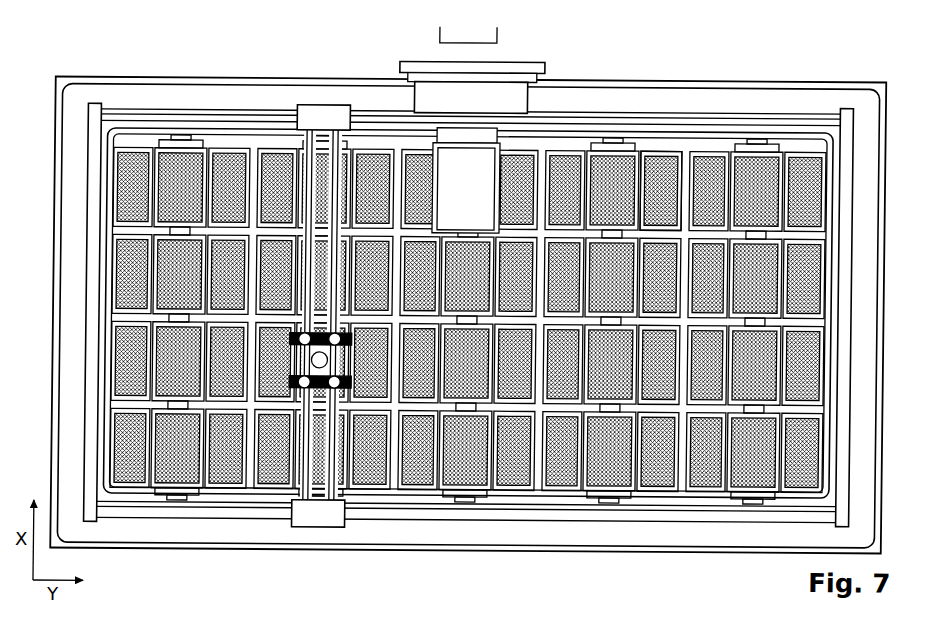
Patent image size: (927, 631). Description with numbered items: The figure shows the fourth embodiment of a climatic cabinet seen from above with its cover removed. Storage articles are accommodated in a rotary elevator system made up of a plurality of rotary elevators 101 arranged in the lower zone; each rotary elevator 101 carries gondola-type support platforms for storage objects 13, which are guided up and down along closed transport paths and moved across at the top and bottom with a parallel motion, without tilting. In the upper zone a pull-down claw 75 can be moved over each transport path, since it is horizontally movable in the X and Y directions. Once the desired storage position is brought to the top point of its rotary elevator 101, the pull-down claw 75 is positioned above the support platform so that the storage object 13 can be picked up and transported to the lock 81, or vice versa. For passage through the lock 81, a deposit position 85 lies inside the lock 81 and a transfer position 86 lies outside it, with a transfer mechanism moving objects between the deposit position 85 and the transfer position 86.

The storage object 13 is at (660, 162).
The pull-down claw 75 is at (302, 481).
The lock 81 is at (482, 95).
The deposit position 85 is at (453, 152).
The transfer position 86 is at (434, 32).
The rotary elevator 101 is at (157, 515).